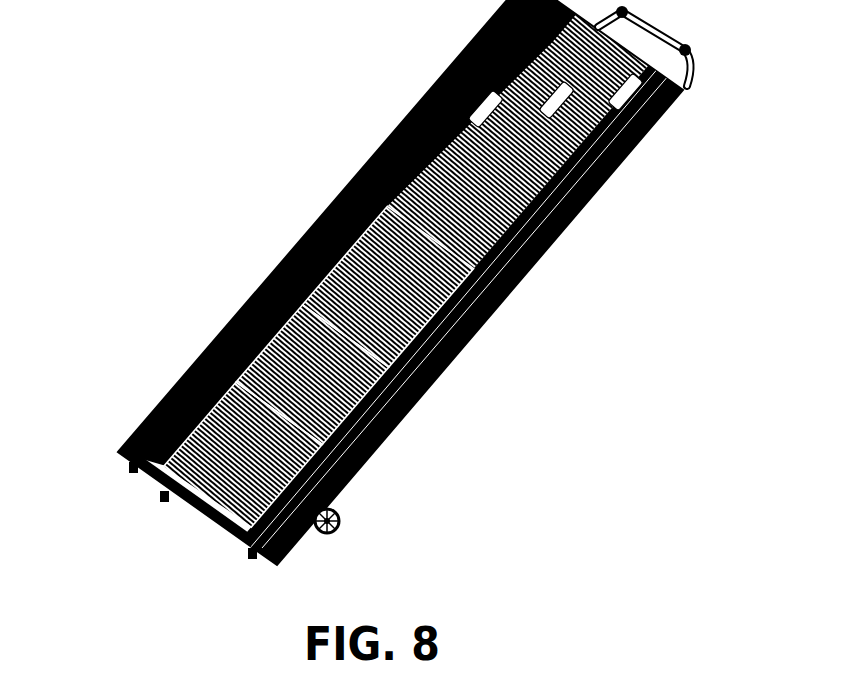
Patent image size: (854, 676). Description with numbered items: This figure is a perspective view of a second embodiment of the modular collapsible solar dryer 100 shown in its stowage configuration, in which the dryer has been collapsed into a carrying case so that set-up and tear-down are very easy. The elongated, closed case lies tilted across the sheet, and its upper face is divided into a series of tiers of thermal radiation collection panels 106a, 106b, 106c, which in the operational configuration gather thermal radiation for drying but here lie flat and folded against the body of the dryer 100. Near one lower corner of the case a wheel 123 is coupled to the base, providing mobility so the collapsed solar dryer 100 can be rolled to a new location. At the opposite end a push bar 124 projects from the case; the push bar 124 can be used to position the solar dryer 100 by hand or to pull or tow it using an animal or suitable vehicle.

The solar dryer system 100 is at (277, 88).
The thermal radiation collection panel 106a is at (222, 509).
The thermal radiation collection panel 106b is at (262, 333).
The thermal radiation collection panel 106c is at (313, 246).
The wheel 123 is at (340, 532).
The push bar 124 is at (700, 62).